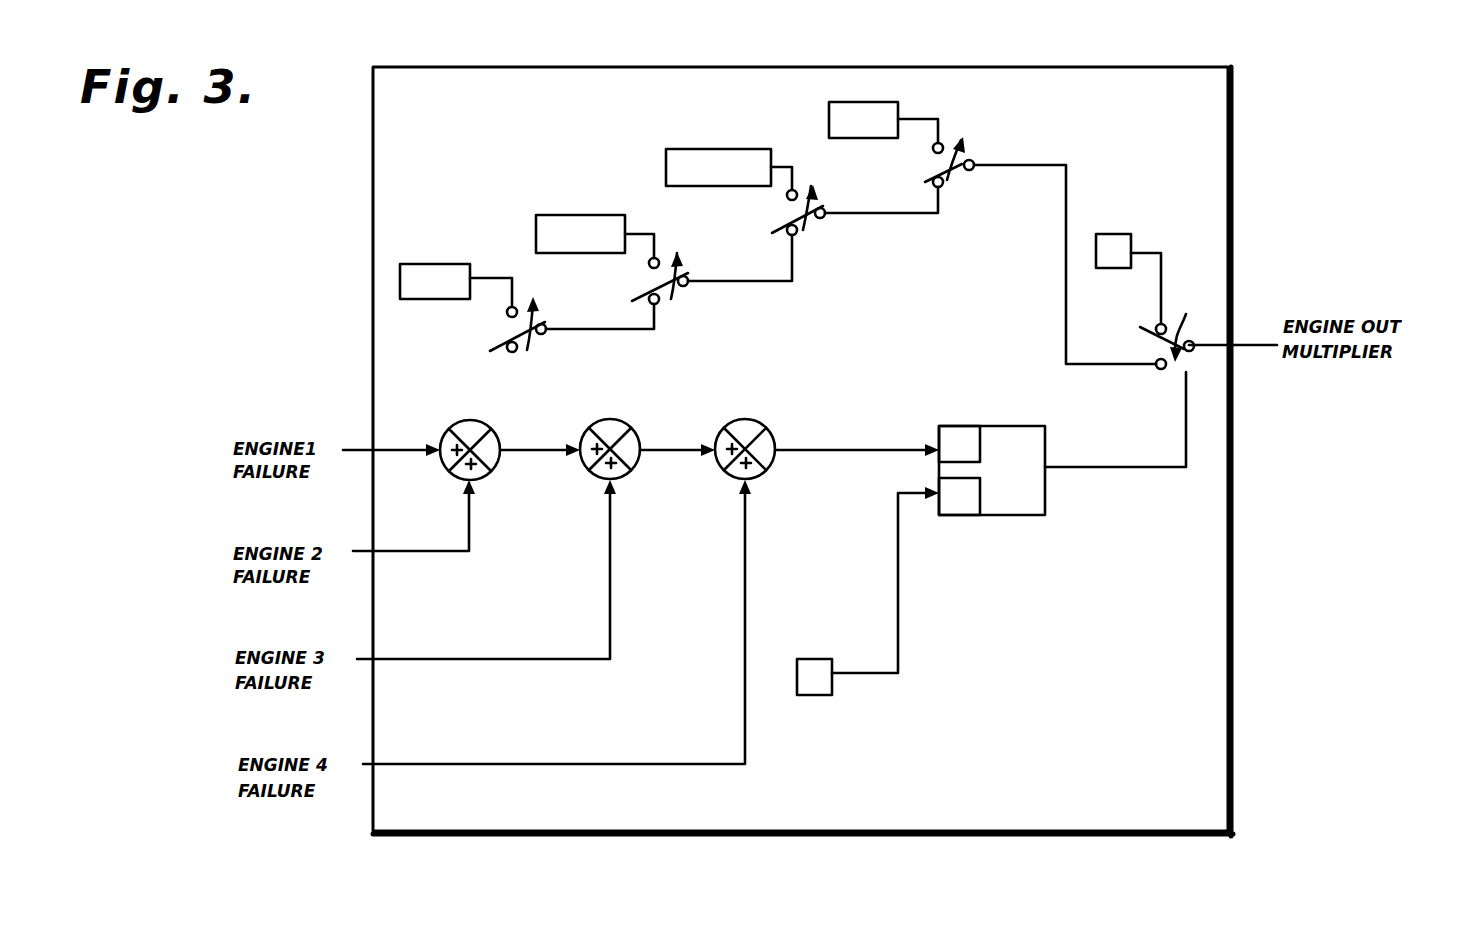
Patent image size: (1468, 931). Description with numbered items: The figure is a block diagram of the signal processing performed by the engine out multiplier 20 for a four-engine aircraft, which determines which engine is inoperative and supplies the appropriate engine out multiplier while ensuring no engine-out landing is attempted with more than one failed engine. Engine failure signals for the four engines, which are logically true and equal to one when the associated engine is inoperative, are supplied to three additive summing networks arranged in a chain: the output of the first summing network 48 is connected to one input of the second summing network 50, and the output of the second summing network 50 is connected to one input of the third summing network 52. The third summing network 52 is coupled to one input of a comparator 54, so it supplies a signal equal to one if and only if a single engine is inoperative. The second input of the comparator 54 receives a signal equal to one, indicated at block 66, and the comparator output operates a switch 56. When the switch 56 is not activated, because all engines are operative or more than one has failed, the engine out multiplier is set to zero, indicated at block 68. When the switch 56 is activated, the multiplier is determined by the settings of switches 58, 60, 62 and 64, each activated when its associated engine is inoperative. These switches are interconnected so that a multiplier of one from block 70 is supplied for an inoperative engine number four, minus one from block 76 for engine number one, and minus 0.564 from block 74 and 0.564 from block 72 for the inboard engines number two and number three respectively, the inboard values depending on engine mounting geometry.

The engine out multiplier 20 is at (1162, 813).
The first summing network 48 is at (487, 424).
The second summing network 50 is at (633, 428).
The third summing network 52 is at (771, 431).
The comparator 54 is at (1022, 516).
The switch 56 is at (1185, 322).
The switch 58 is at (965, 152).
The switch 60 is at (820, 198).
The switch 62 is at (685, 265).
The switch 64 is at (543, 315).
The block indicating a signal equal to 1 66 is at (830, 658).
The block indicating engine out multiplier equal to 0 68 is at (1133, 242).
The block indicating engine out multiplier equal to 1 70 is at (427, 262).
The block indicating engine out multiplier equal to 0.564 72 is at (577, 213).
The block indicating engine out multiplier equal to -0.564 74 is at (722, 148).
The block indicating engine out multiplier equal to -1 76 is at (873, 98).